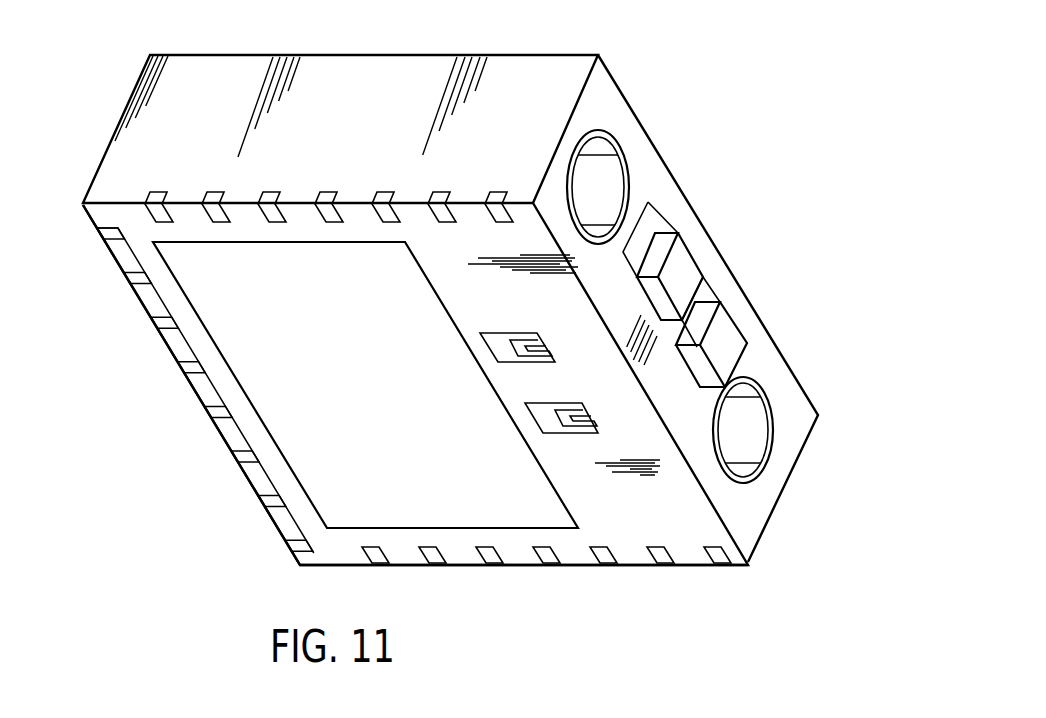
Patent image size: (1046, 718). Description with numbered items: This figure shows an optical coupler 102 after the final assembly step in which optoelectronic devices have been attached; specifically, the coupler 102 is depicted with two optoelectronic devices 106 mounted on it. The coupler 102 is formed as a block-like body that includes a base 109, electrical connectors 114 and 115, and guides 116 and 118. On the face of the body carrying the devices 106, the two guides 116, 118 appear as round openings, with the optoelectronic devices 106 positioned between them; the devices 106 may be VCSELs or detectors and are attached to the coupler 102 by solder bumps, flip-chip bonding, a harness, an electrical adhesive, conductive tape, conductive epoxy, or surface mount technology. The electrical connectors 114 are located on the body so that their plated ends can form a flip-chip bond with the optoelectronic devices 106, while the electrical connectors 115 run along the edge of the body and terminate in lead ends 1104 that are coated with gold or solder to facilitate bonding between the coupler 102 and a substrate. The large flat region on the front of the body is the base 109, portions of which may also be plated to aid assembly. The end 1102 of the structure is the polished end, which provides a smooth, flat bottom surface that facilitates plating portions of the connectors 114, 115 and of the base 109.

The coupler 102 is at (636, 58).
The optoelectronic device 106 is at (720, 333).
The base 109 is at (288, 420).
The electrical connector 114 is at (587, 423).
The electrical connector 115 is at (203, 380).
The guide 116 is at (757, 432).
The guide 118 is at (608, 182).
The end 1102 is at (308, 455).
The lead end 1104 is at (153, 306).